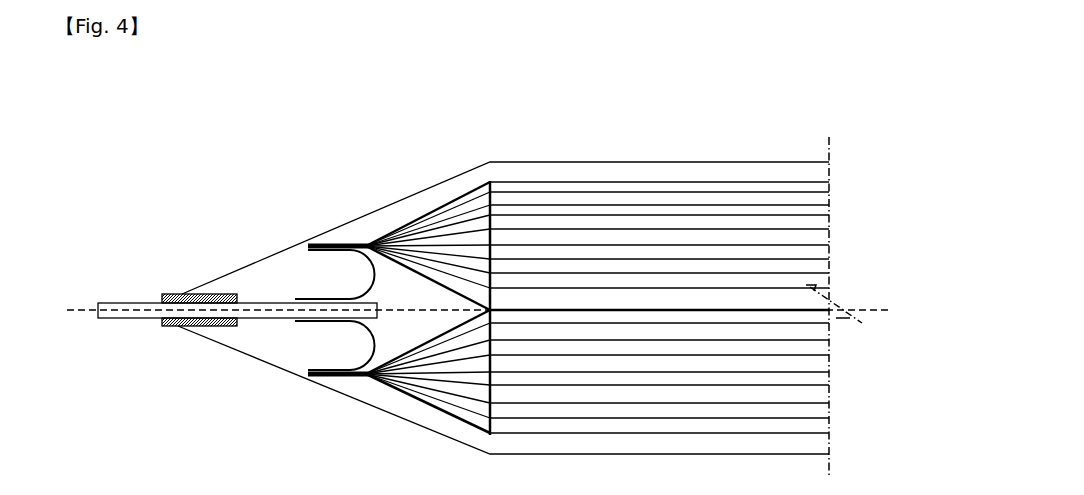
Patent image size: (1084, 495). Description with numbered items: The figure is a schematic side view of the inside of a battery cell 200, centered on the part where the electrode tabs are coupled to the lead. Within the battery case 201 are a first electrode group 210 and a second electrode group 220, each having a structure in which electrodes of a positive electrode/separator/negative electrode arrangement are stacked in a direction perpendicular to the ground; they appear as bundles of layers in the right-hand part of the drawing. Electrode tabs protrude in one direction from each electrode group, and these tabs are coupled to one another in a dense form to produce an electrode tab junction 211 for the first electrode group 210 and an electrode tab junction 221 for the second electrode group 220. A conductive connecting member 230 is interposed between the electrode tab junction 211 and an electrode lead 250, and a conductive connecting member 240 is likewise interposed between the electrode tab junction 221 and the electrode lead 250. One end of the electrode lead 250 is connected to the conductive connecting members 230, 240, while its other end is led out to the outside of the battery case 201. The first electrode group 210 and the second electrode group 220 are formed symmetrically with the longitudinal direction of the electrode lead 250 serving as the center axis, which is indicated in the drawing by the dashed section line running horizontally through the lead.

The battery cell 200 is at (162, 100).
The battery case 201 is at (548, 162).
The first electrode group 210 is at (783, 229).
The electrode tab junction 211 is at (340, 245).
The second electrode group 220 is at (783, 379).
The electrode tab junction 221 is at (330, 373).
The conductive connecting member 230 is at (373, 276).
The conductive connecting member 240 is at (373, 342).
The electrode lead 250 is at (210, 308).